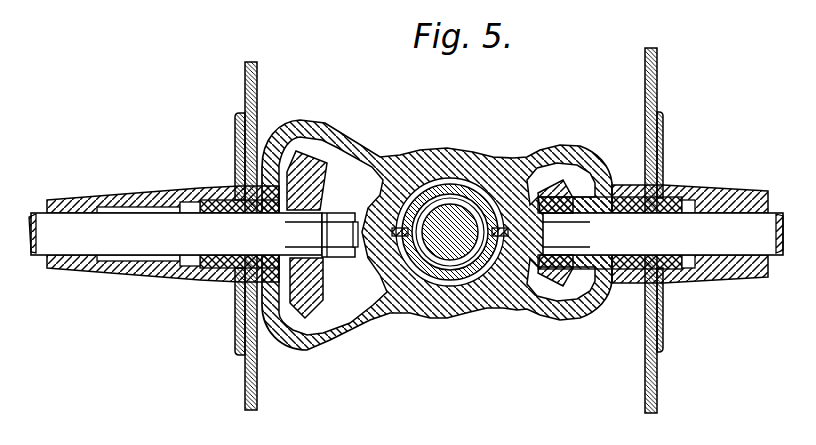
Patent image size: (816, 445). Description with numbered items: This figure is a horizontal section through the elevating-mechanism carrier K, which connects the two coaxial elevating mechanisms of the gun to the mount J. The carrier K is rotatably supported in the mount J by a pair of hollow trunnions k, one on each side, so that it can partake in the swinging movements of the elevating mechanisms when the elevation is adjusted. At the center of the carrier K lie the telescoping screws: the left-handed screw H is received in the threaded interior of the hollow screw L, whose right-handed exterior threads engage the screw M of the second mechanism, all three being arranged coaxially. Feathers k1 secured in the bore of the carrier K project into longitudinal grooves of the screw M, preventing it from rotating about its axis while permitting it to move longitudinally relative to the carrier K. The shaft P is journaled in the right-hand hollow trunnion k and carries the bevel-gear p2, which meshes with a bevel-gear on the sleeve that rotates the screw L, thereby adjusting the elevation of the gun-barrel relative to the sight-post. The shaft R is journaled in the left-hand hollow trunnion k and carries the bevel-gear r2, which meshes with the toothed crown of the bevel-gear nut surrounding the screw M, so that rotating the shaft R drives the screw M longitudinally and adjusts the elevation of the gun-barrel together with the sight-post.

The elevating-mechanism carrier K is at (418, 295).
The mount J is at (257, 100).
The hollow trunnions k is at (208, 195).
The shaft R is at (122, 247).
The shaft P is at (743, 245).
The feathers k1 is at (479, 342).
The bevel-gear r2 is at (323, 285).
The bevel-gear p2 is at (577, 263).
The screw L is at (477, 195).
The screw M is at (442, 188).
The screw H is at (452, 262).